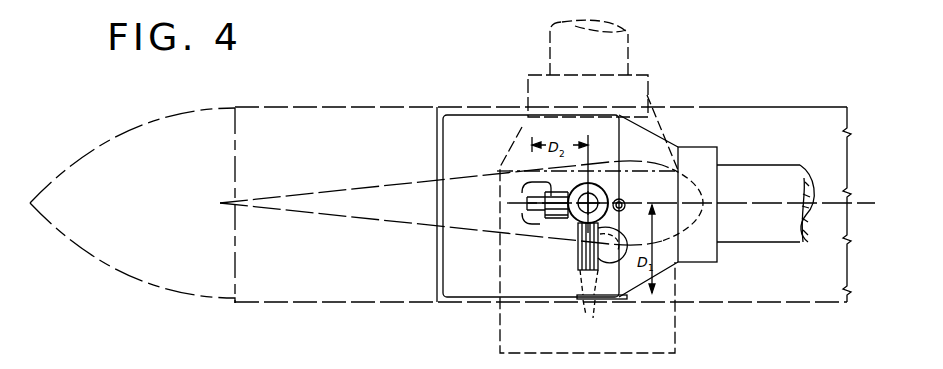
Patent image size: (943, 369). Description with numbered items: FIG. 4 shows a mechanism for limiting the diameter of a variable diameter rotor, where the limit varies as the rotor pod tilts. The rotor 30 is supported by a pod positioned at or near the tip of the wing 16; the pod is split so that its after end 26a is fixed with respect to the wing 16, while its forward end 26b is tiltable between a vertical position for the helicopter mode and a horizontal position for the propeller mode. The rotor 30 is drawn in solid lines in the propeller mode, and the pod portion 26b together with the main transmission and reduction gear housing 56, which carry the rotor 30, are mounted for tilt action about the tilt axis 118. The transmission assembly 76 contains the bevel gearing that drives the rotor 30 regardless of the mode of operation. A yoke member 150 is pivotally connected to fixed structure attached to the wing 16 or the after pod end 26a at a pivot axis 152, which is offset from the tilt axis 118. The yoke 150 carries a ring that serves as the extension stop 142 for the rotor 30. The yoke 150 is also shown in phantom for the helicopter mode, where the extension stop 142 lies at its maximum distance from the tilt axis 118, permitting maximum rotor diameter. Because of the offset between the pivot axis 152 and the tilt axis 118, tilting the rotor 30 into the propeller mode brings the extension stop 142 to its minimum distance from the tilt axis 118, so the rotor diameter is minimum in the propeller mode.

The wing 16 is at (340, 188).
The after end of pod 26a is at (178, 118).
The forward end of pod 26b is at (815, 128).
The variable diameter rotor 30 is at (645, 45).
The main transmission and reduction gear housing 56 is at (637, 91).
The transmission assembly 76 is at (522, 127).
The tilt axis 118 is at (570, 225).
The extension stop 142 is at (527, 212).
The yoke member 150 is at (542, 184).
The pivot axis 152 is at (624, 201).